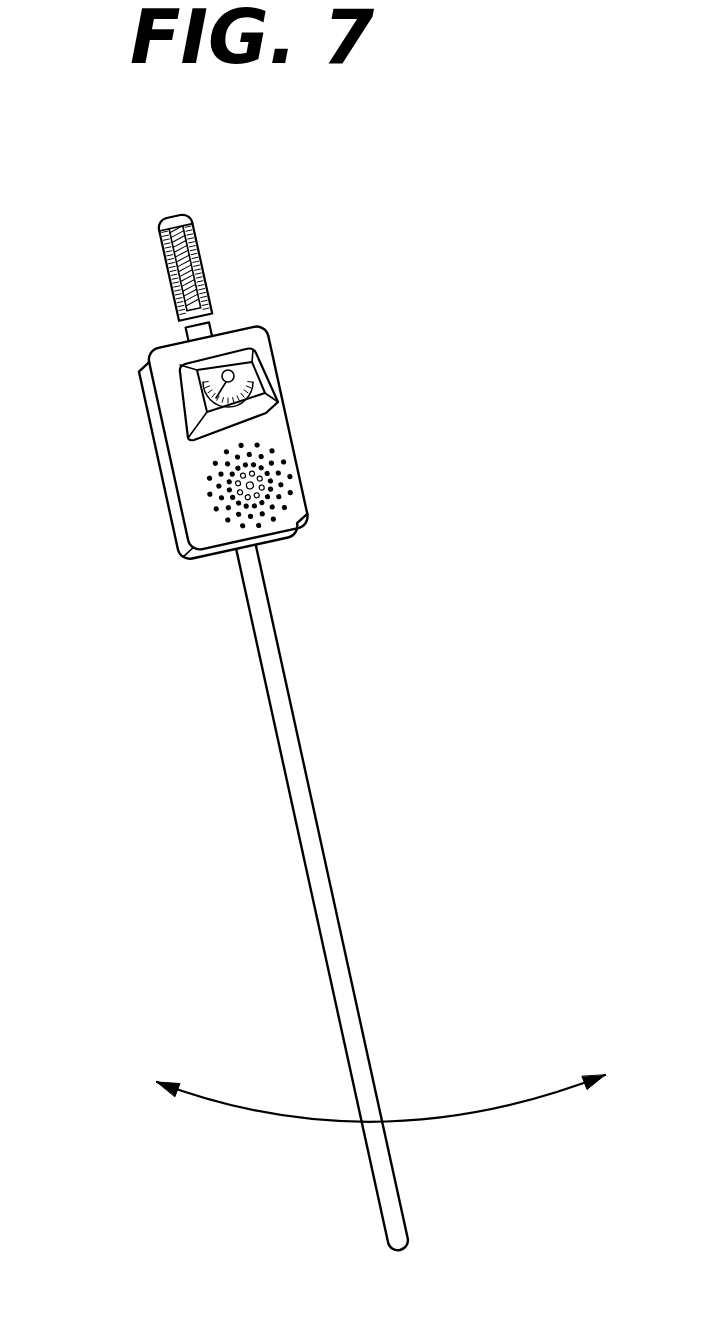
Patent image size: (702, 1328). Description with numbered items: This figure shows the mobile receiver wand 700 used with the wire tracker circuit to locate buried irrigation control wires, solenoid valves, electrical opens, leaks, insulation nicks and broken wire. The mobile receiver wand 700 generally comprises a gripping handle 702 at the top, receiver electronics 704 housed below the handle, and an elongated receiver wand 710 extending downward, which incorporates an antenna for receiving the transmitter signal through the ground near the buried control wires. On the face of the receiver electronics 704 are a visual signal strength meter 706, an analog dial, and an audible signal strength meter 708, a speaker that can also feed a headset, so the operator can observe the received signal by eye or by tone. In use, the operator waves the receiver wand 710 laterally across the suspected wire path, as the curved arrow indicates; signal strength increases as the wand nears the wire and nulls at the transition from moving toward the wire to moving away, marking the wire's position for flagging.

The mobile receiver wand 700 is at (489, 246).
The gripping handle 702 is at (192, 252).
The receiver electronics 704 is at (272, 345).
The visual signal strength meter 706 is at (197, 400).
The audible signal strength meter 708 is at (275, 484).
The receiver wand 710 is at (350, 979).